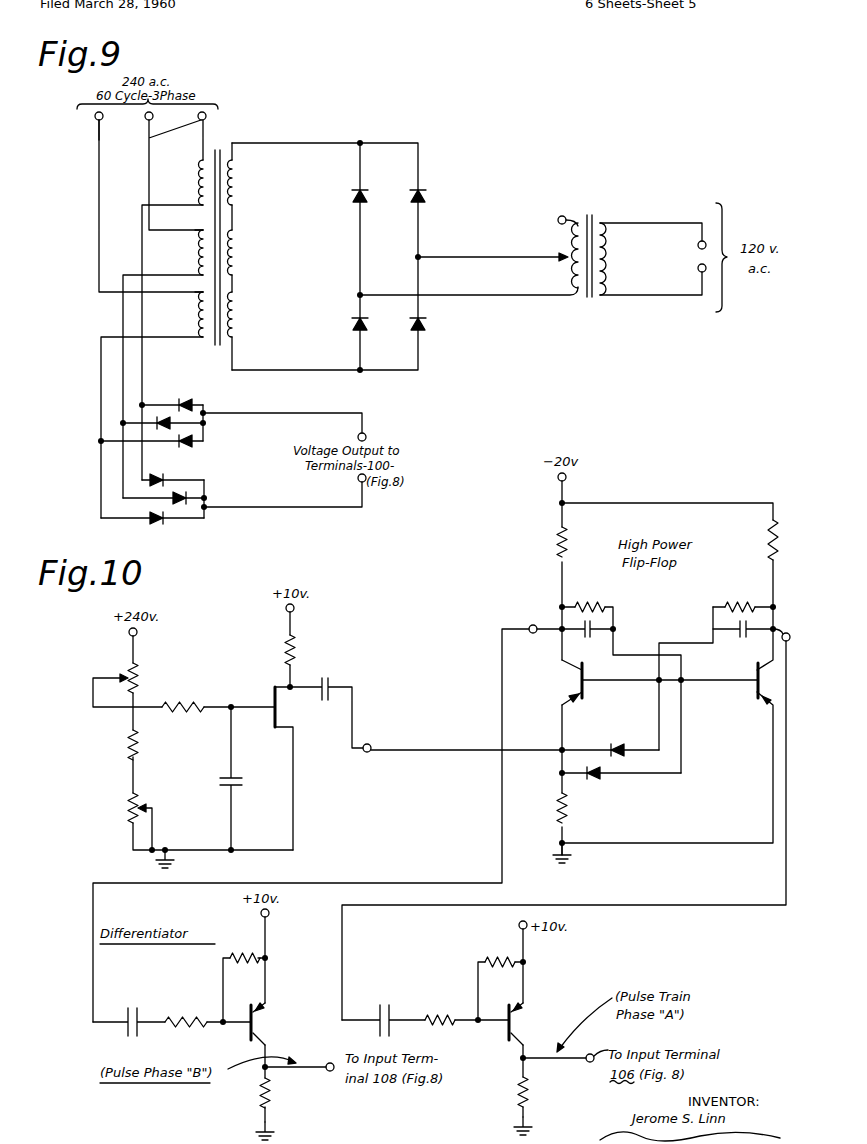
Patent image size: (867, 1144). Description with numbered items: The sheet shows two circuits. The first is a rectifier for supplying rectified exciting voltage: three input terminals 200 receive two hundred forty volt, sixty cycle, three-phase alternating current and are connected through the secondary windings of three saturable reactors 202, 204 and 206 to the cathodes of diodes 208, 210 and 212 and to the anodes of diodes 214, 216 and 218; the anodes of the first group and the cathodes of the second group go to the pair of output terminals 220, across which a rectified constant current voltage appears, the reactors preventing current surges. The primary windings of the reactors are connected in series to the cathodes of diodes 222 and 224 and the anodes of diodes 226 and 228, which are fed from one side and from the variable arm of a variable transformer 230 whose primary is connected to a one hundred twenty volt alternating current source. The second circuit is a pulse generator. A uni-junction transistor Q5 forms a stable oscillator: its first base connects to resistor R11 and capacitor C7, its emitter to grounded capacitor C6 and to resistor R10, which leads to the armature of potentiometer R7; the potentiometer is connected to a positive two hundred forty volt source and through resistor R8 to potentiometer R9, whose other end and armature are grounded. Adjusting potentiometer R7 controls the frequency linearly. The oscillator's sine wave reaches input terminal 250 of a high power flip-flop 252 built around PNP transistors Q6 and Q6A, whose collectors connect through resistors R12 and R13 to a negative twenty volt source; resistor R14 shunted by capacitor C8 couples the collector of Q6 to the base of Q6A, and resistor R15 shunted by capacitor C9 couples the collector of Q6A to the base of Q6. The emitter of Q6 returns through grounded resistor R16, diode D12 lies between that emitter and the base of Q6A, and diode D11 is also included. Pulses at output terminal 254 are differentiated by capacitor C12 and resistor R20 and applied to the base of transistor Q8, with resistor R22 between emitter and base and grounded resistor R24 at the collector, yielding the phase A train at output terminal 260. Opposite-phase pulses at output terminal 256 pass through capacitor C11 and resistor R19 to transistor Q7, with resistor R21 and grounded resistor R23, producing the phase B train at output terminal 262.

In FIG. 9, the input terminals 200 is at (150, 121).
In FIG. 9, the saturable reactor 202 is at (219, 145).
In FIG. 9, the saturable reactor 204 is at (209, 221).
In FIG. 9, the saturable reactor 206 is at (209, 286).
In FIG. 9, the diode 208 is at (190, 402).
In FIG. 9, the diode 210 is at (154, 416).
In FIG. 9, the diode 212 is at (188, 446).
In FIG. 9, the diode 214 is at (174, 478).
In FIG. 9, the diode 216 is at (192, 495).
In FIG. 9, the diode 218 is at (160, 524).
In FIG. 9, the output terminals 220 is at (366, 435).
In FIG. 9, the diode 222 is at (352, 205).
In FIG. 9, the diode 224 is at (408, 204).
In FIG. 9, the diode 226 is at (351, 330).
In FIG. 9, the diode 228 is at (410, 330).
In FIG. 9, the variable transformer 230 is at (616, 196).
In FIG. 10, the potentiometer R7 is at (134, 678).
In FIG. 10, the resistor R8 is at (136, 744).
In FIG. 10, the potentiometer R9 is at (130, 810).
In FIG. 10, the resistor R10 is at (204, 700).
In FIG. 10, the resistor R11 is at (292, 664).
In FIG. 10, the capacitor C6 is at (218, 784).
In FIG. 10, the capacitor C7 is at (334, 684).
In FIG. 10, the uni-junction transistor Q5 is at (284, 707).
In FIG. 10, the input terminal 250 is at (371, 749).
In FIG. 10, the output terminal 254 is at (535, 626).
In FIG. 10, the resistor R12 is at (552, 552).
In FIG. 10, the resistor R13 is at (754, 500).
In FIG. 10, the resistor R14 is at (612, 604).
In FIG. 10, the resistor R15 is at (740, 604).
In FIG. 10, the capacitor C8 is at (600, 642).
In FIG. 10, the capacitor C9 is at (754, 642).
In FIG. 10, the PNP transistor Q6 is at (584, 696).
In FIG. 10, the PNP transistor Q6A is at (756, 698).
In FIG. 10, the diode D11 is at (610, 748).
In FIG. 10, the diode D12 is at (590, 780).
In FIG. 10, the resistor R16 is at (568, 818).
In FIG. 10, the high power flip-flop 252 is at (674, 591).
In FIG. 10, the output terminal 256 is at (784, 630).
In FIG. 10, the resistor R21 is at (252, 955).
In FIG. 10, the capacitor C11 is at (146, 1006).
In FIG. 10, the resistor R19 is at (192, 1008).
In FIG. 10, the transistor Q7 is at (258, 1022).
In FIG. 10, the resistor R23 is at (258, 1097).
In FIG. 10, the output terminal 262 is at (326, 1071).
In FIG. 10, the capacitor C12 is at (392, 1004).
In FIG. 10, the resistor R20 is at (434, 1014).
In FIG. 10, the resistor R22 is at (506, 960).
In FIG. 10, the transistor Q8 is at (516, 1016).
In FIG. 10, the resistor R24 is at (519, 1086).
In FIG. 10, the output terminal 260 is at (586, 1066).